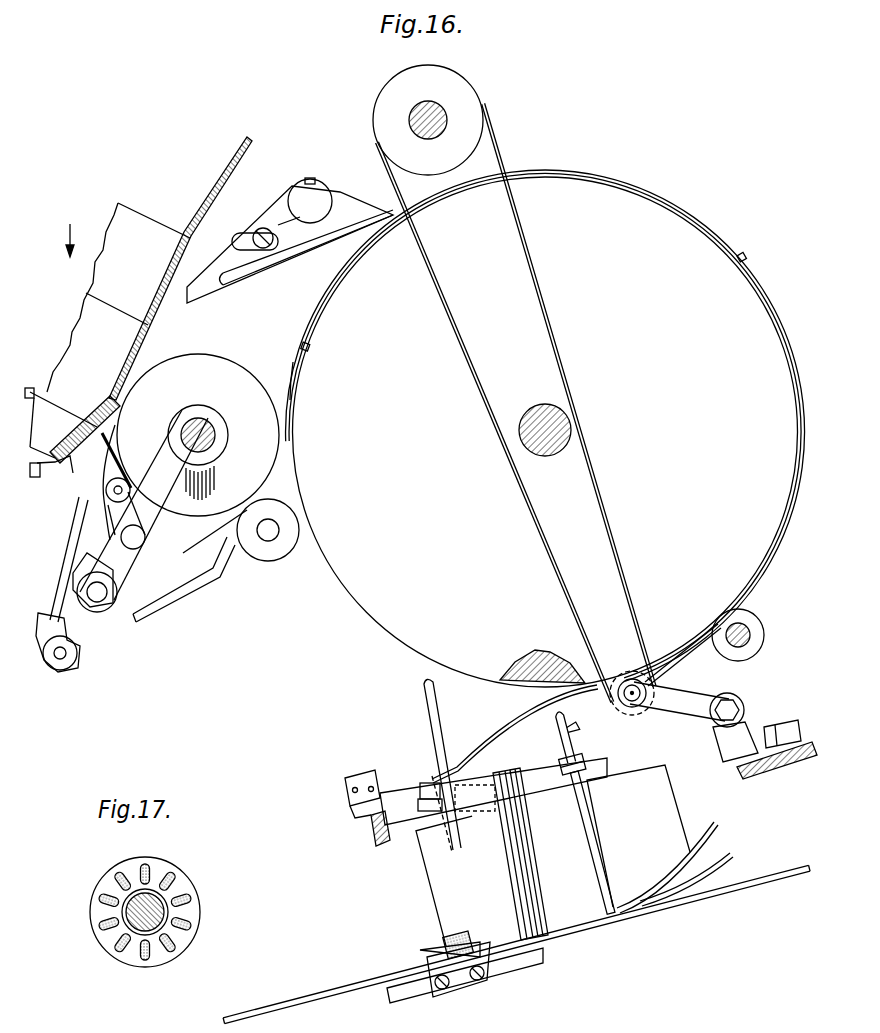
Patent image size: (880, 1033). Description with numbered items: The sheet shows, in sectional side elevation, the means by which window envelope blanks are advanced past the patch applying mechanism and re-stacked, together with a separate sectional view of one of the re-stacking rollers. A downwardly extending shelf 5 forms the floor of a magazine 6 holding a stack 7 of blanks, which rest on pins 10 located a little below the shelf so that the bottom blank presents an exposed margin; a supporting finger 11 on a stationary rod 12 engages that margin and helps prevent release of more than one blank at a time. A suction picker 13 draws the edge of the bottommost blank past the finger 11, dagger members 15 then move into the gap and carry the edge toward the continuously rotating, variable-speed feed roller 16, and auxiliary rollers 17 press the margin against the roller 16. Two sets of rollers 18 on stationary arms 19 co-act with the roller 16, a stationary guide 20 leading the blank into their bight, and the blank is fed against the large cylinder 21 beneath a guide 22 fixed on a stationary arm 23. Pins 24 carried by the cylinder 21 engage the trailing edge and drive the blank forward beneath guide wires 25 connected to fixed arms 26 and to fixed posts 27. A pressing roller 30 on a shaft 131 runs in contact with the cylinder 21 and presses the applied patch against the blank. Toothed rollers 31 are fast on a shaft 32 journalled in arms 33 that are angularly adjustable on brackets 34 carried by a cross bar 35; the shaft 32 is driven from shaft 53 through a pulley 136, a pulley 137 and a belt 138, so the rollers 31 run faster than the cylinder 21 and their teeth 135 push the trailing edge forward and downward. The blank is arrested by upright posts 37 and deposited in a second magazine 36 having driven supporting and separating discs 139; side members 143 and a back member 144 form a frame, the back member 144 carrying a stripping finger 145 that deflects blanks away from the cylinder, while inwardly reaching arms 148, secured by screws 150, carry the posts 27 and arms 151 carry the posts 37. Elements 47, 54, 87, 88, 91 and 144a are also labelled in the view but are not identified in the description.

In FIG. 16, the shelf 5 is at (227, 170).
In FIG. 16, the magazine 6 is at (68, 229).
In FIG. 16, the stack 7 is at (133, 198).
In FIG. 16, the pins 10 is at (31, 387).
In FIG. 16, the supporting finger 11 is at (68, 468).
In FIG. 16, the stationary rod 12 is at (40, 462).
In FIG. 16, the suction picker 13 is at (120, 445).
In FIG. 16, the dagger members 15 is at (72, 524).
In FIG. 16, the feed roller 16 is at (220, 360).
In FIG. 16, the auxiliary rollers 17 is at (124, 478).
In FIG. 16, the rollers 18 is at (278, 557).
In FIG. 16, the stationary arm 19 is at (205, 572).
In FIG. 16, the stationary guide 20 is at (197, 522).
In FIG. 16, the cylinder 21 is at (345, 567).
In FIG. 16, the guide 22 is at (287, 363).
In FIG. 16, the stationary arm 23 is at (277, 220).
In FIG. 16, the pins 24 is at (310, 341).
In FIG. 16, the guide wires 25 is at (608, 178).
In FIG. 16, the fixed arms 26 is at (240, 228).
In FIG. 16, the posts 27 is at (562, 735).
In FIG. 16, the pressing roller 30 is at (743, 613).
In FIG. 16, the rollers 31 is at (635, 710).
In FIG. 17, the rollers 31 is at (100, 878).
In FIG. 17, the shaft 32 is at (120, 910).
In FIG. 16, the arms 33 is at (688, 700).
In FIG. 16, the brackets 34 is at (795, 727).
In FIG. 16, the cross bar 35 is at (763, 767).
In FIG. 16, the second magazine 36 is at (405, 906).
In FIG. 16, the upright posts 37 is at (430, 723).
In FIG. 16, the roller hub 47 is at (210, 428).
In FIG. 16, the shaft 53 is at (417, 112).
In FIG. 16, the drum shaft 54 is at (542, 405).
In FIG. 16, the link pin 87 is at (137, 550).
In FIG. 16, the roller surface 88 is at (200, 490).
In FIG. 16, the pivot 91 is at (90, 573).
In FIG. 16, the shaft 131 is at (750, 628).
In FIG. 17, the teeth 135 is at (178, 880).
In FIG. 16, the pulley 136 is at (467, 93).
In FIG. 16, the pulley 137 is at (625, 668).
In FIG. 16, the belt 138 is at (560, 567).
In FIG. 16, the supporting and separating disc 139 is at (372, 979).
In FIG. 16, the side members 143 is at (522, 787).
In FIG. 16, the back member 144 is at (383, 832).
In FIG. 16, the cam 144a is at (507, 683).
In FIG. 16, the stripping finger 145 is at (478, 750).
In FIG. 16, the inwardly reaching arms 148 is at (592, 762).
In FIG. 16, the screw 150 is at (575, 750).
In FIG. 16, the inwardly reaching arms 151 is at (427, 802).